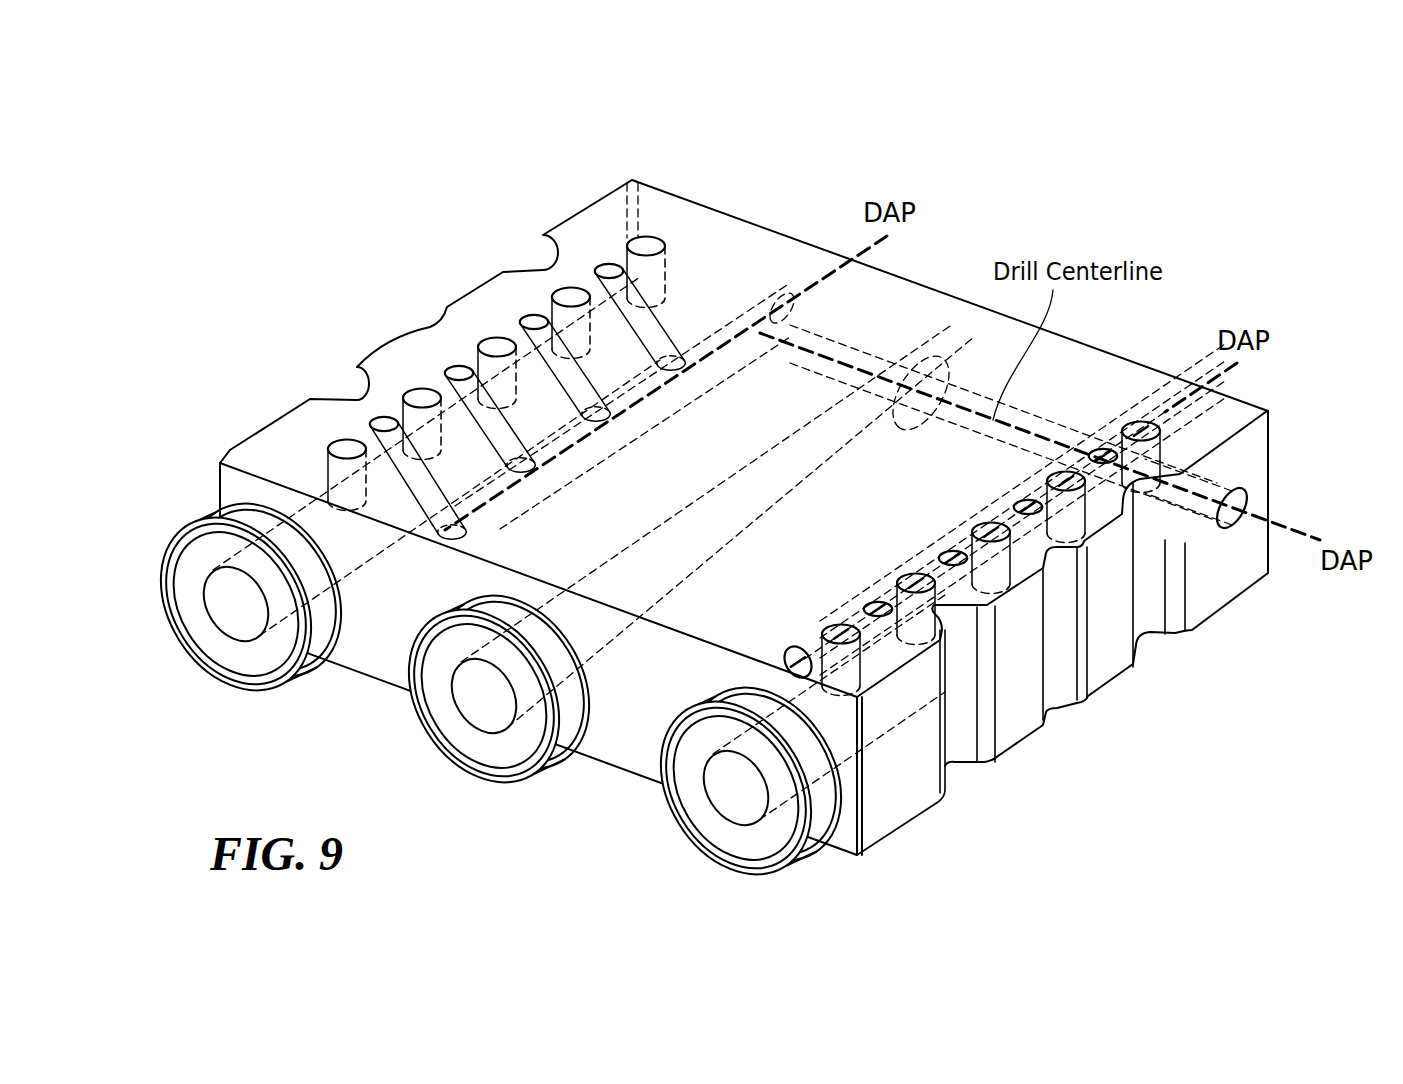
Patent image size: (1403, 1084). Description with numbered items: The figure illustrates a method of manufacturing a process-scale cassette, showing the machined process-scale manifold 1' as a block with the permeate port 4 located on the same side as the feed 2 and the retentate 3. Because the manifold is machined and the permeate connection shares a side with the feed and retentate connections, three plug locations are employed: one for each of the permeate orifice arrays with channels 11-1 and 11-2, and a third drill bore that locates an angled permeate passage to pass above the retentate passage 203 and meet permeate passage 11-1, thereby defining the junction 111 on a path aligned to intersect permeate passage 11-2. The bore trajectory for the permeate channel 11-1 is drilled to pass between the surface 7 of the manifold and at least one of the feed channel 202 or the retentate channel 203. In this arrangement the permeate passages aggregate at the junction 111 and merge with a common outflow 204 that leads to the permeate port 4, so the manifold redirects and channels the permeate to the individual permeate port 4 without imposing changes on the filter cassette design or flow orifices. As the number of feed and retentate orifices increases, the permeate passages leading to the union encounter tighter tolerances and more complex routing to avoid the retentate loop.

The machined process-scale manifold 1' is at (744, 505).
The surface of the manifold 7 is at (717, 235).
The feed 2 is at (267, 522).
The permeate port 4 is at (560, 700).
The retentate 3 is at (813, 790).
The feed channel 202 is at (327, 517).
The retentate passage 203 is at (1008, 627).
The common outflow 204 is at (779, 527).
The permeate channel 11-1 is at (1003, 512).
The permeate channel 11-2 is at (643, 417).
The junction 111 is at (1180, 449).